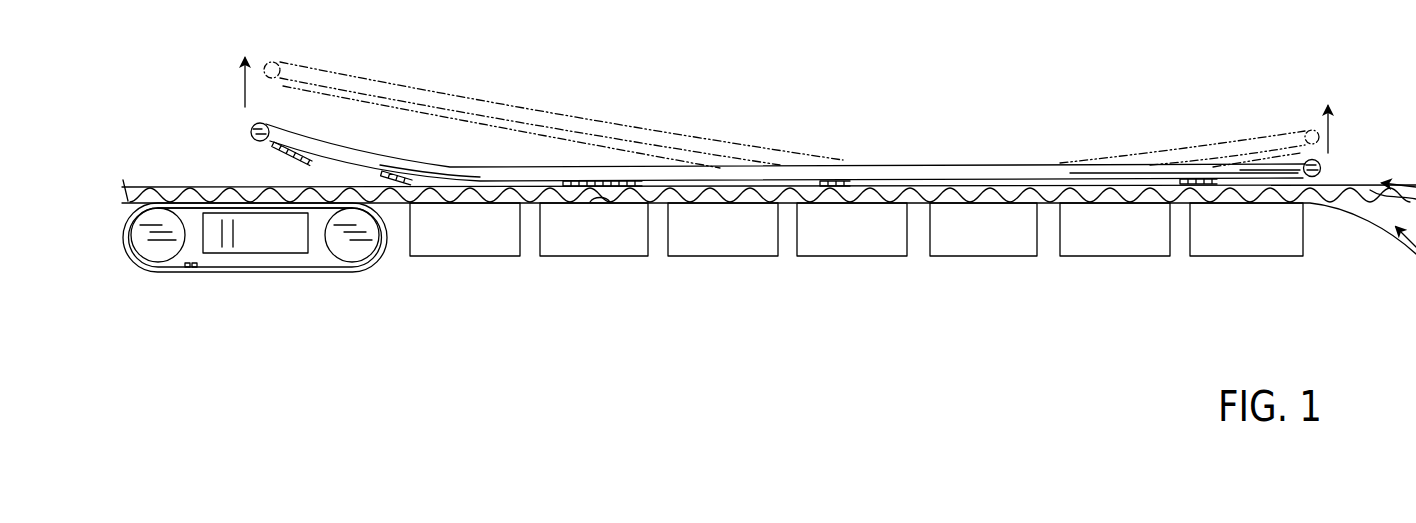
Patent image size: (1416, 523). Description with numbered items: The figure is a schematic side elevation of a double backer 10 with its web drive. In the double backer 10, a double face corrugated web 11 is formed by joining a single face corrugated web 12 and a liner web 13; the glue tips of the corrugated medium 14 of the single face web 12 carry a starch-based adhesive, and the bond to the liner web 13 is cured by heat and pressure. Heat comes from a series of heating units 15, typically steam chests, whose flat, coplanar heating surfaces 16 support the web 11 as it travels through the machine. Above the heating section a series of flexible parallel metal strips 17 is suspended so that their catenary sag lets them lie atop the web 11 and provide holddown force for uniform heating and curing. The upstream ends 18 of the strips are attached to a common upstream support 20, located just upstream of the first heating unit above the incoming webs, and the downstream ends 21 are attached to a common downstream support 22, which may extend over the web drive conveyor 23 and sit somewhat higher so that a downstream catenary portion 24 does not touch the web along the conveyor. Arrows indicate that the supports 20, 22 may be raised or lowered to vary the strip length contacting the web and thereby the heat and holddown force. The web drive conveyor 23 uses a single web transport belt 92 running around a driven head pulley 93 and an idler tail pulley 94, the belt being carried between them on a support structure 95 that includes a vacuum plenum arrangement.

The double backer 10 is at (1000, 105).
The double face corrugated web 11 is at (167, 192).
The single face corrugated web 12 is at (1343, 186).
The liner web 13 is at (243, 204).
The corrugated medium 14 is at (1362, 204).
The heating units 15 is at (445, 258).
The heating surfaces 16 is at (598, 198).
The flexible parallel metal strips 17 is at (783, 178).
The upstream ends 18 is at (1283, 167).
The upstream support 20 is at (1311, 129).
The downstream ends 21 is at (287, 130).
The downstream support 22 is at (251, 128).
The web drive conveyor 23 is at (201, 279).
The downstream catenary portion 24 is at (288, 149).
The web transport belt 92 is at (313, 208).
The driven head pulley 93 is at (163, 249).
The idler tail pulley 94 is at (355, 257).
The support structure 95 is at (273, 245).